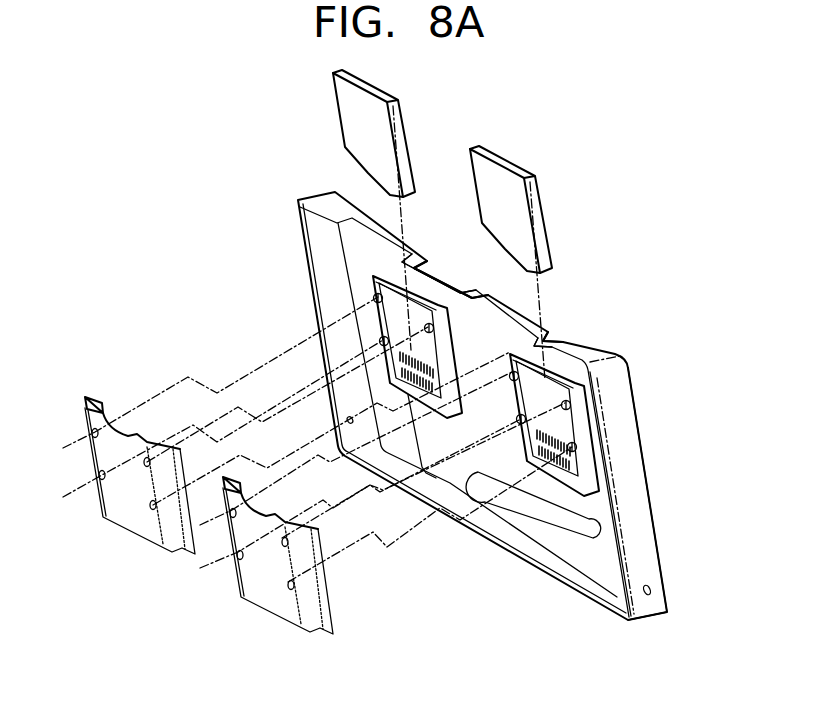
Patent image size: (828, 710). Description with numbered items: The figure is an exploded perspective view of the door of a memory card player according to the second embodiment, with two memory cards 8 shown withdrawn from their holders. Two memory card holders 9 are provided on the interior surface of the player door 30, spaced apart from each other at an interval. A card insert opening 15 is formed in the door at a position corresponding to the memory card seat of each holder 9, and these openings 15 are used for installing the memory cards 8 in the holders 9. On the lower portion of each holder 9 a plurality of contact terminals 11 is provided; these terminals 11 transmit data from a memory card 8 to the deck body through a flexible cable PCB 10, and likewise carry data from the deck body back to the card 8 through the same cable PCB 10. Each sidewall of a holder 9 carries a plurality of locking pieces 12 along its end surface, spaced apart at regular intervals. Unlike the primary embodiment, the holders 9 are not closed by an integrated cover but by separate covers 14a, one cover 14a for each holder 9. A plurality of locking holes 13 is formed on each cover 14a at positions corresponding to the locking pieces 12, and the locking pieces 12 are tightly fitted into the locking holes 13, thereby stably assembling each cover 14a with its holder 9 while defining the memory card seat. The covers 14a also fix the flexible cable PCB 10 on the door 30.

The memory card 8 is at (400, 127).
The memory card holder 9 is at (377, 297).
The flexible cable PCB 10 is at (592, 520).
The contact terminals 11 is at (399, 358).
The locking pieces 12 is at (383, 340).
The locking holes 13 is at (153, 505).
The cover 14a is at (103, 498).
The card insert opening 15 is at (409, 252).
The player door 30 is at (645, 507).